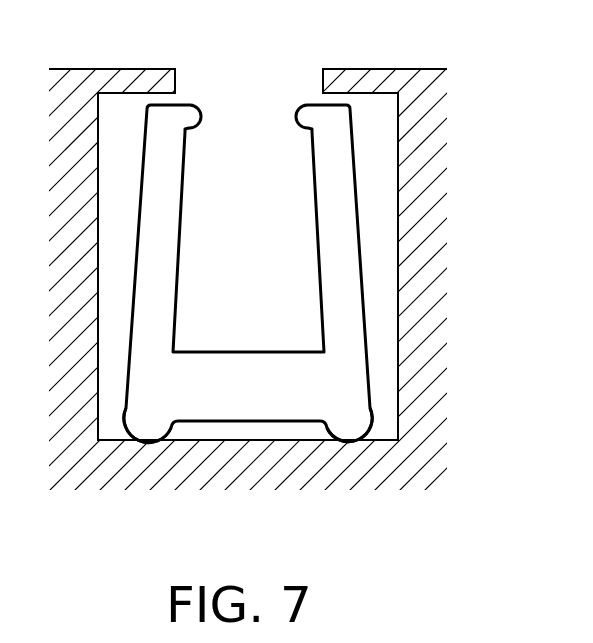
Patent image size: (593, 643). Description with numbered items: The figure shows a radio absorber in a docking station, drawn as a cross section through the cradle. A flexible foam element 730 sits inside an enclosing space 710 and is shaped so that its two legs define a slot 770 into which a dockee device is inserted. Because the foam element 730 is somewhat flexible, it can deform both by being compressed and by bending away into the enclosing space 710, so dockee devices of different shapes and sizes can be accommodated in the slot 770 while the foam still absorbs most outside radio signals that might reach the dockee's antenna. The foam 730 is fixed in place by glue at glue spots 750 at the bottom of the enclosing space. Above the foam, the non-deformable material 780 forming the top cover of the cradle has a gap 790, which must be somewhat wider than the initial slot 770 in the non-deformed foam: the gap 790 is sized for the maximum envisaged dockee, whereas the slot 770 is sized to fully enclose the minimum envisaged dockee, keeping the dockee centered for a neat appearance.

The enclosing space 710 is at (373, 133).
The non-deformable material 780 is at (397, 72).
The foam element 730 is at (235, 367).
The glue spots 750 is at (147, 440).
The gap 790 is at (314, 42).
The slot 770 is at (295, 102).